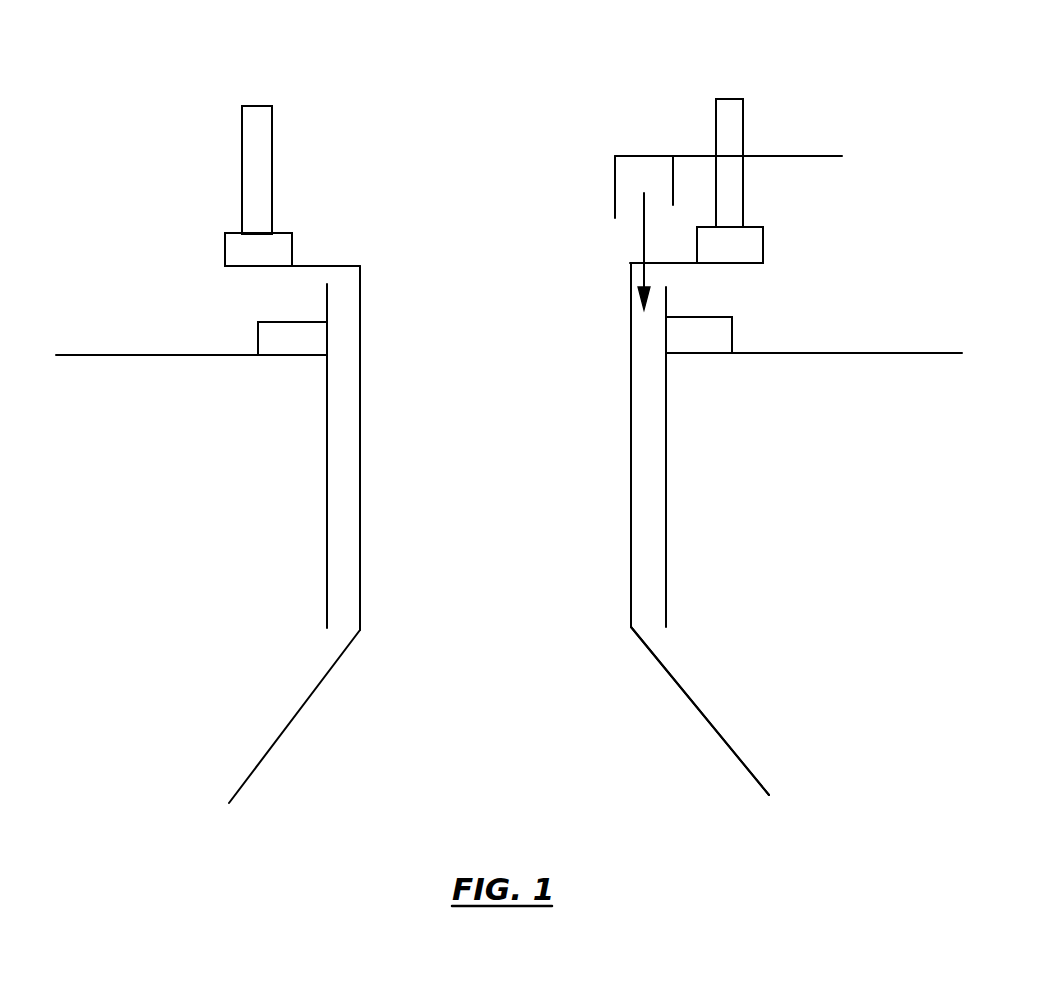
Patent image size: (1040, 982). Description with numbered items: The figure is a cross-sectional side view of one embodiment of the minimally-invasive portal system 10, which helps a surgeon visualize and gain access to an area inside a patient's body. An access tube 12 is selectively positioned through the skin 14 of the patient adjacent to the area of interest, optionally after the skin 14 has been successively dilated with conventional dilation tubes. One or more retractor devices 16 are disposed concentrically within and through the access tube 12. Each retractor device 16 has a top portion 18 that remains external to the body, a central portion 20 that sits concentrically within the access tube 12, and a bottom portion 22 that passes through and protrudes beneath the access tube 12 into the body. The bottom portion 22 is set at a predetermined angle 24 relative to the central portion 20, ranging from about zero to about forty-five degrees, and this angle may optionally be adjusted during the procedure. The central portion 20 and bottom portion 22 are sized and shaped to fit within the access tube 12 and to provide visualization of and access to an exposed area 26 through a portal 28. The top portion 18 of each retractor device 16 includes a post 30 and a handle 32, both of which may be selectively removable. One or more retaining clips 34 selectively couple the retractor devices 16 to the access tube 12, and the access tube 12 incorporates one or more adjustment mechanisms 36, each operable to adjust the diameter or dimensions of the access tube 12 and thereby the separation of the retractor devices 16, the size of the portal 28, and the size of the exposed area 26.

The minimally-invasive portal system 10 is at (650, 78).
The access tube 12 is at (329, 557).
The skin 14 is at (93, 355).
The retractor device 16 is at (362, 477).
The top portion 18 is at (358, 262).
The central portion 20 is at (362, 423).
The bottom portion 22 is at (316, 688).
The predetermined angle (θ) 24 is at (350, 600).
The exposed area 26 is at (505, 780).
The portal 28 is at (505, 481).
The post 30 is at (293, 245).
The handle 32 is at (257, 100).
The retaining clip 34 is at (817, 156).
The adjustment mechanism 36 is at (327, 322).